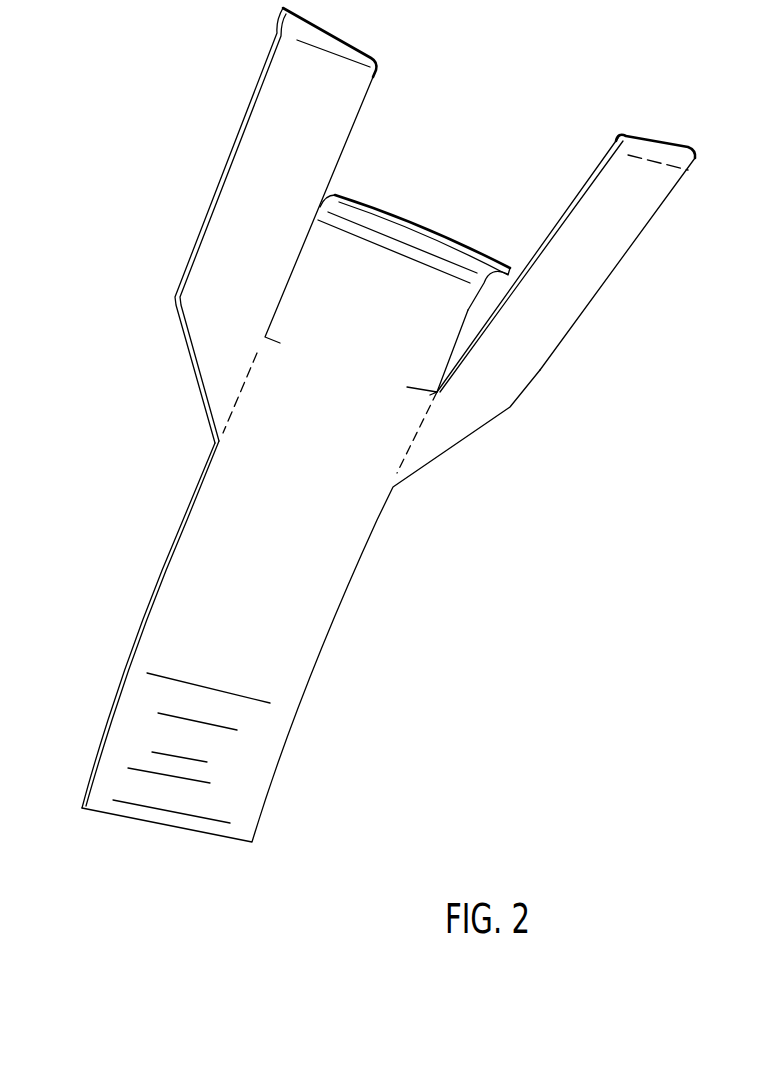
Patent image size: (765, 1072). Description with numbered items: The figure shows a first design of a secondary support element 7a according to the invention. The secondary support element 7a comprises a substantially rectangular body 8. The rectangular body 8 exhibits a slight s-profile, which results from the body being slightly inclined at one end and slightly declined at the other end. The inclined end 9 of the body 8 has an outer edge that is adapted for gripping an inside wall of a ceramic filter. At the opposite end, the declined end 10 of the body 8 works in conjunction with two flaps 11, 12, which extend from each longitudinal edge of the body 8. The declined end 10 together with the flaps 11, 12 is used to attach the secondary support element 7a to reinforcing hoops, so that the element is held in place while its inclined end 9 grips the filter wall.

The secondary support element 7a is at (130, 843).
The rectangular body 8 is at (283, 595).
The inclined end 9 is at (243, 772).
The declined end 10 is at (380, 290).
The flap 11 is at (547, 315).
The flap 12 is at (248, 192).